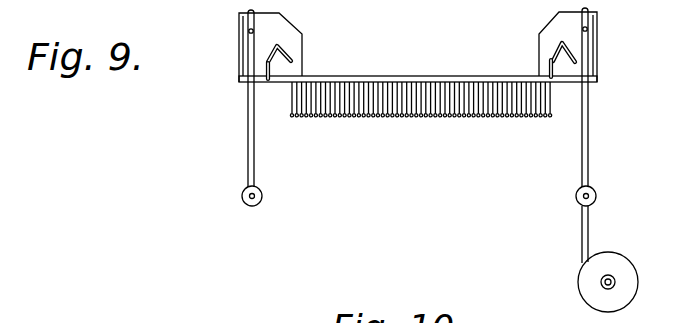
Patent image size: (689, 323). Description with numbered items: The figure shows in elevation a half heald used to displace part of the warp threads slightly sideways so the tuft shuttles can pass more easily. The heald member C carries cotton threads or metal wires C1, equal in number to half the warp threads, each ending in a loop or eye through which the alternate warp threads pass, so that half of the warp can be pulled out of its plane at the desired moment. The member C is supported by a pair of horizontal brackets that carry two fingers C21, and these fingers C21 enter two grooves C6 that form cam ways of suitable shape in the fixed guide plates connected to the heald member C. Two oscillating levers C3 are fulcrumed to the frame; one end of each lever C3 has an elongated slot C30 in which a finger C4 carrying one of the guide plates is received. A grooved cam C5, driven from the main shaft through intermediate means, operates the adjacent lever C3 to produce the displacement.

The heald member C is at (395, 79).
The metal wires C1 is at (363, 104).
The oscillating levers C3 is at (598, 140).
The finger C4 is at (610, 54).
The grooved cam C5 is at (620, 273).
The grooves C6 is at (282, 51).
The fingers C21 is at (273, 64).
The elongated slot C30 is at (610, 24).